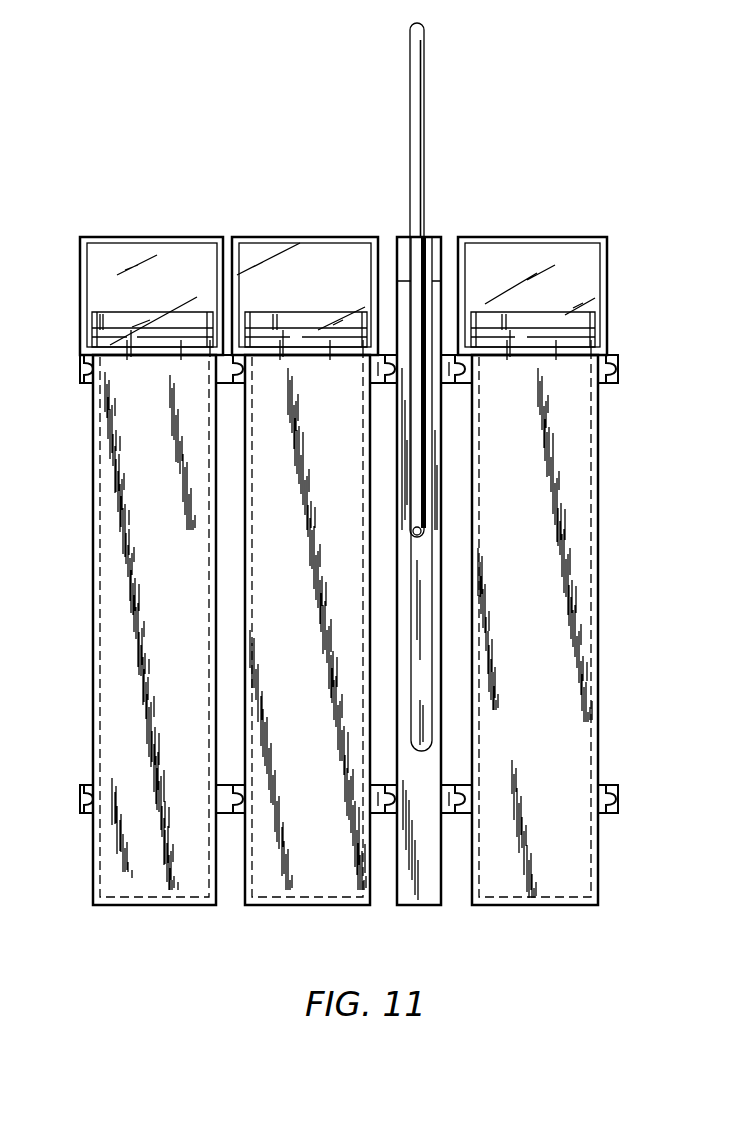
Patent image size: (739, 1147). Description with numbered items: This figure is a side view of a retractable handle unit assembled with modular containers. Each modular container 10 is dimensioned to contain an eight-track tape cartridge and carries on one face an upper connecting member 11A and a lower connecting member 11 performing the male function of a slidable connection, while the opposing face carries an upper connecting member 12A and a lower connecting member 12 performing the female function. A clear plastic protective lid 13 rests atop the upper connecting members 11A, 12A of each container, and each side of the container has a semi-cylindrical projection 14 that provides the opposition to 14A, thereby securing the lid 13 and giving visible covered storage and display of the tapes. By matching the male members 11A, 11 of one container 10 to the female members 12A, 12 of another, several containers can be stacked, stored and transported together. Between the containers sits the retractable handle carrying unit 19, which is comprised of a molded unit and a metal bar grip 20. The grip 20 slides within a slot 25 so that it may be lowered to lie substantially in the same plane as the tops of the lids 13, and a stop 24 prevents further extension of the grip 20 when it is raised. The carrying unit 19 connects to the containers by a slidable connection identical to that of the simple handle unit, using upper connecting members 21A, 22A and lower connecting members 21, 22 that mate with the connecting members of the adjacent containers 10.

The modular container 10 is at (560, 898).
The lower connecting member 11 is at (603, 796).
The lower connecting member 12 is at (476, 797).
The clear plastic protective lid 13 is at (527, 240).
The semi-cylindrical projection 14 is at (504, 338).
The opposing projection 14A is at (556, 342).
The upper connecting member 11A is at (612, 368).
The upper connecting member 12A is at (476, 362).
The retractable handle carrying unit 19 is at (413, 906).
The metal bar grip 20 is at (424, 73).
The lower connecting member of carrying unit 21 is at (453, 812).
The lower connecting member of carrying unit 22 is at (390, 812).
The upper connecting member of carrying unit 21A is at (448, 384).
The upper connecting member of carrying unit 22A is at (388, 384).
The stop 24 is at (421, 533).
The slot 25 is at (421, 675).